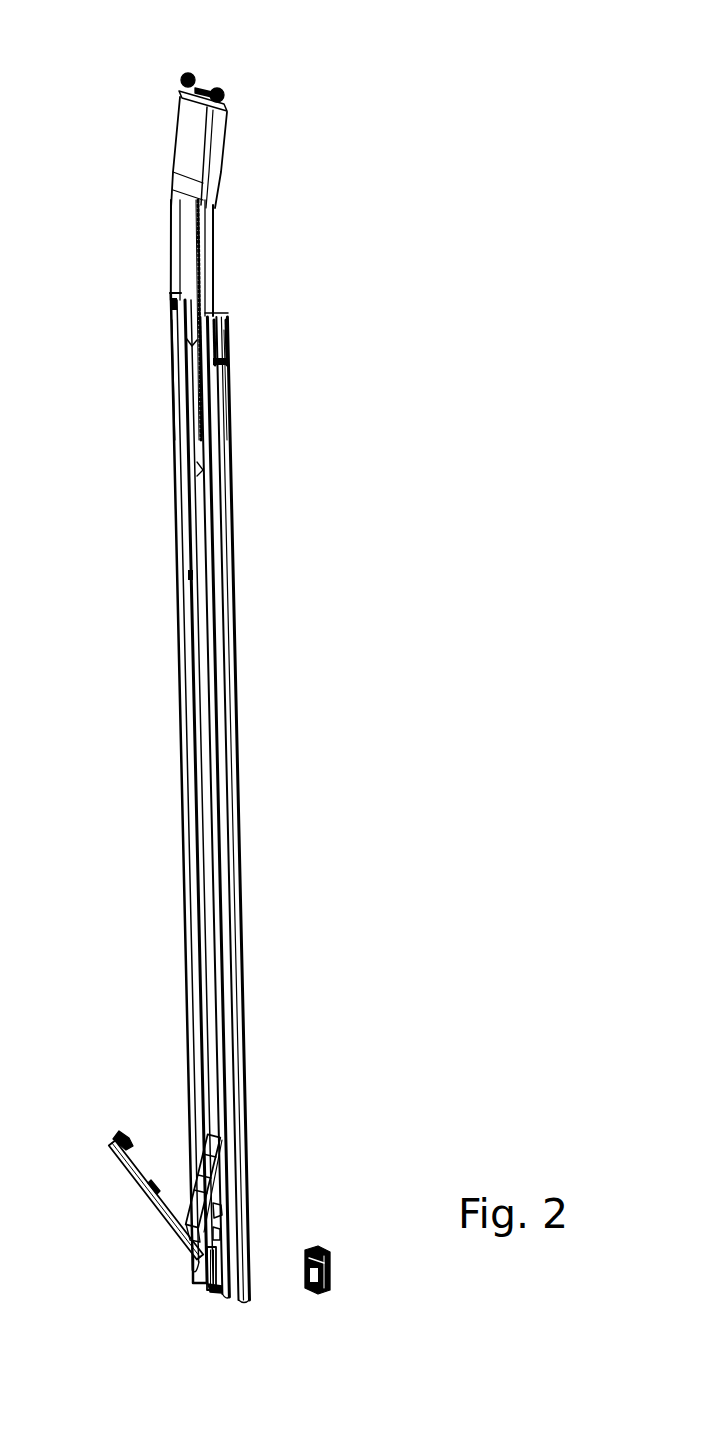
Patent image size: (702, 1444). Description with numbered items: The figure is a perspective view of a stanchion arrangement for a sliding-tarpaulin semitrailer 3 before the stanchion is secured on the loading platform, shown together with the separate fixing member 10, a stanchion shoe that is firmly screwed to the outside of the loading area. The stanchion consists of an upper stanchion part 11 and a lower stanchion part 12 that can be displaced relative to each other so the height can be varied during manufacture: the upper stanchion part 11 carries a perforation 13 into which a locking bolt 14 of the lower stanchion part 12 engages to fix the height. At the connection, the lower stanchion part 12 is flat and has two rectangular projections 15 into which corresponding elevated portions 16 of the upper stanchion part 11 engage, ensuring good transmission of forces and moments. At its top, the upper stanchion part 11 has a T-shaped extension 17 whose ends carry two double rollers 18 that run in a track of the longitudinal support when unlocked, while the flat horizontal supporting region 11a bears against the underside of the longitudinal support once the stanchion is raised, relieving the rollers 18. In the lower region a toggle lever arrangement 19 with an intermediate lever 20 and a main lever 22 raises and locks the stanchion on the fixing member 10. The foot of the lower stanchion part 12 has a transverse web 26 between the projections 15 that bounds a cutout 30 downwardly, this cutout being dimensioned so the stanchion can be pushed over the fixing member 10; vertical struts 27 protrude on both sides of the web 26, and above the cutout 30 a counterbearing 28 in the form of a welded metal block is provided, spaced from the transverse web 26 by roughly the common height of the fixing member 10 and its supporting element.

The semitrailer 3 is at (289, 576).
The fixing member 10 is at (333, 1238).
The upper stanchion part 11 is at (190, 143).
The supporting region 11a is at (185, 92).
The lower stanchion part 12 is at (232, 697).
The perforation 13 is at (197, 245).
The locking bolt 14 is at (190, 342).
The rectangular projections 15 is at (180, 405).
The elevated portions 16 is at (172, 228).
The T-shaped extension 17 is at (201, 80).
The double rollers 18 is at (230, 93).
The toggle lever arrangement 19 is at (131, 1103).
The intermediate lever 20 is at (193, 1193).
The main lever 22 is at (155, 1203).
The transverse web 26 is at (212, 1286).
The struts 27 is at (217, 1265).
The counterbearing 28 is at (218, 1210).
The cutout 30 is at (217, 1233).